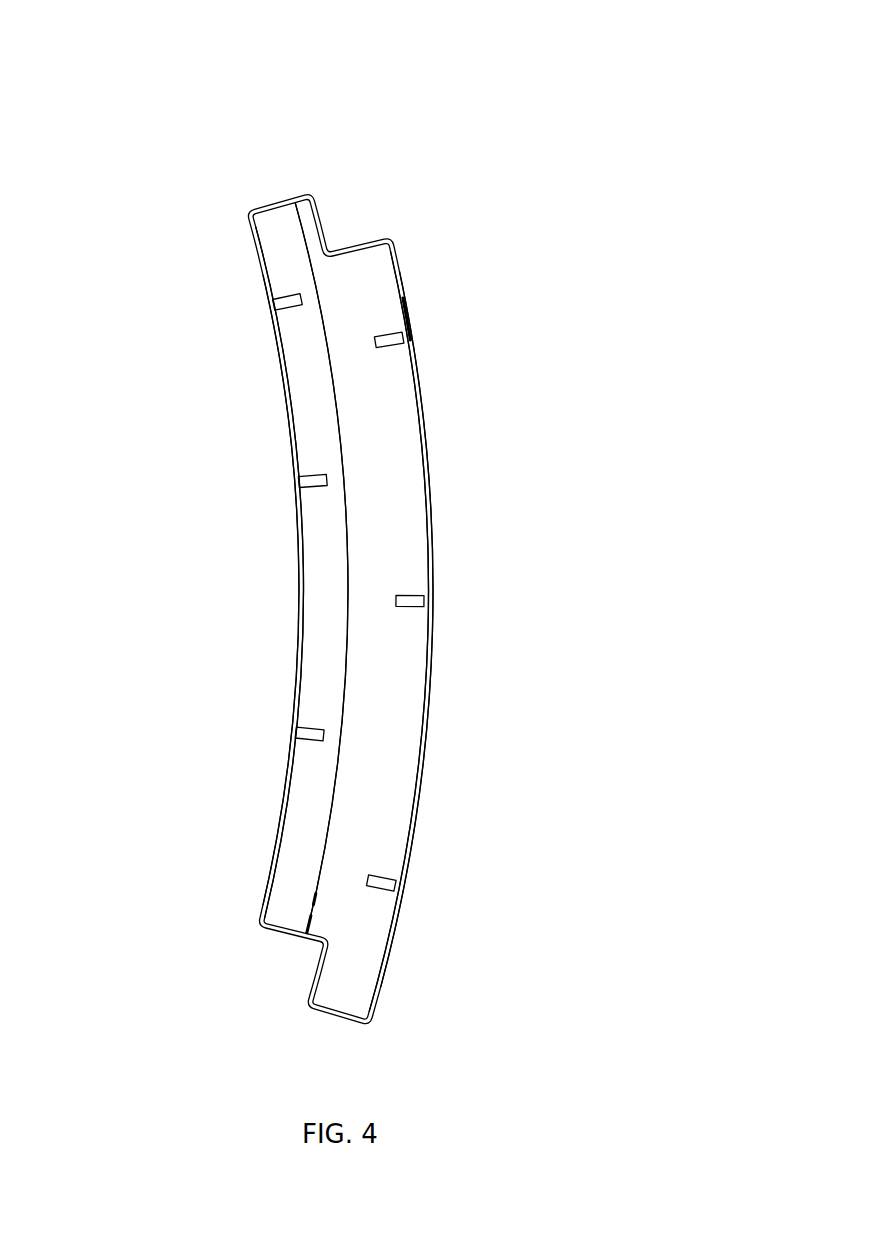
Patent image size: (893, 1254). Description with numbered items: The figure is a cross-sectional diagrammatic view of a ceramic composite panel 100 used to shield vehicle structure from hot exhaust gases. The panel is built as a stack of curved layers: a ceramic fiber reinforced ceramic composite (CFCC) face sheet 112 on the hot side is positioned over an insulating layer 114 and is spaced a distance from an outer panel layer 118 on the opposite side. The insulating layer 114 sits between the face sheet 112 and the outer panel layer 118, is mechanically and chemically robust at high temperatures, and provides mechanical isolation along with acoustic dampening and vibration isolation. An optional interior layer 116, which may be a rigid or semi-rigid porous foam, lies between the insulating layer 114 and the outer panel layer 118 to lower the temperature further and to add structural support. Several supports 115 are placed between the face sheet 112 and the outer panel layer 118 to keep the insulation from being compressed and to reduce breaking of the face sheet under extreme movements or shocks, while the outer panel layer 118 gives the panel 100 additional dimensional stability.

The ceramic composite panel 100 is at (440, 148).
The CFCC face sheet 112 is at (300, 578).
The insulating layer 114 is at (305, 836).
The supports 115 is at (283, 306).
The interior layer 116 is at (390, 723).
The outer panel layer 118 is at (432, 537).